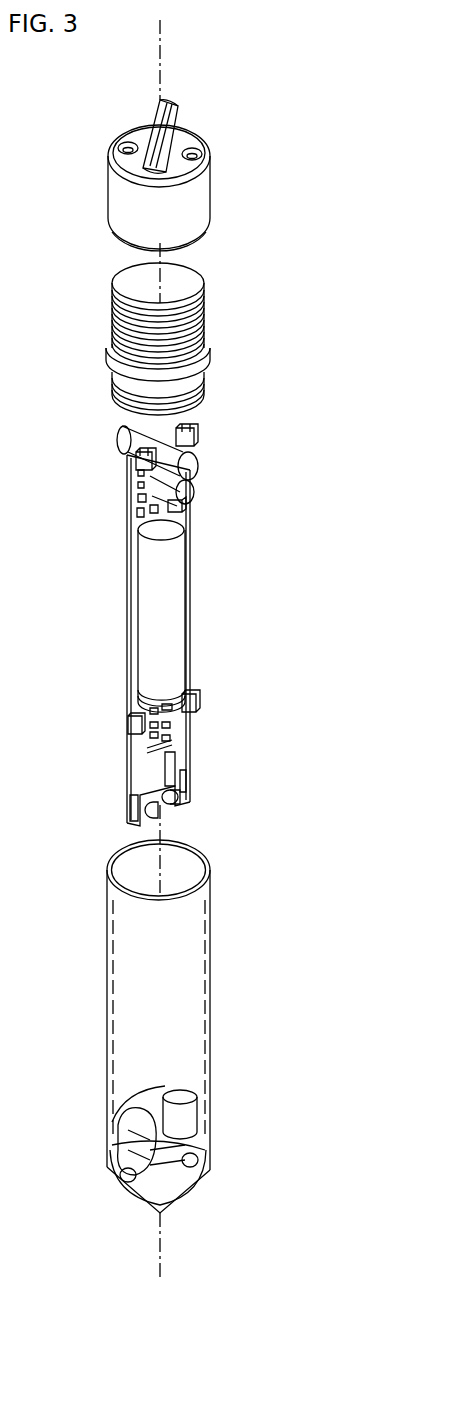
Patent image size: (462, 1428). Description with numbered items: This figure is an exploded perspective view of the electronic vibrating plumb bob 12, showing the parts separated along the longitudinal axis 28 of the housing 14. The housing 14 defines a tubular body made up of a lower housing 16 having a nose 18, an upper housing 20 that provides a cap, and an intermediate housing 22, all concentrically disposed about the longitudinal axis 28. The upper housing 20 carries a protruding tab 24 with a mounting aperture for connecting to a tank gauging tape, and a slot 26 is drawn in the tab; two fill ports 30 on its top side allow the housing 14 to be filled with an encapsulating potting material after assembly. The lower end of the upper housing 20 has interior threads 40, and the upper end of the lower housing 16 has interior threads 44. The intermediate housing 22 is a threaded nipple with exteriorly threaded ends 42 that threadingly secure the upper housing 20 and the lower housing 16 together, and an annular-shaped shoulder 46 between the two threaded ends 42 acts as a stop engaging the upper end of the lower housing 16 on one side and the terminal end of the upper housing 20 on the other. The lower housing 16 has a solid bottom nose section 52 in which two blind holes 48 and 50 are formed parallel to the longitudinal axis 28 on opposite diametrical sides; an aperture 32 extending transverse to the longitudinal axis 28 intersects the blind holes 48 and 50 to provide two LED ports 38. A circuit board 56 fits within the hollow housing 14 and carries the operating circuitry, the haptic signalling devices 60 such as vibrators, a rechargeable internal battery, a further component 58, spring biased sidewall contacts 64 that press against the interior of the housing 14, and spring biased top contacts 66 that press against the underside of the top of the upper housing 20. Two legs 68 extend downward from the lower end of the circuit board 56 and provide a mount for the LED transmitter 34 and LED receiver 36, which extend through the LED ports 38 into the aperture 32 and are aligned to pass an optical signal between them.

The electronic vibrating plumb bob 12 is at (80, 129).
The housing 14 is at (102, 892).
The lower housing 16 is at (125, 1012).
The nose 18 is at (140, 1203).
The upper housing 20 is at (112, 193).
The intermediate housing 22 is at (100, 304).
The tab 24 is at (153, 128).
The slot 26 is at (178, 130).
The longitudinal axis 28 is at (162, 60).
The fill ports 30 is at (122, 142).
The aperture 32 is at (195, 1175).
The LED transmitter 34 is at (152, 806).
The LED receiver 36 is at (180, 803).
The LED ports 38 is at (125, 1175).
The interior threads 40 is at (208, 232).
The exteriorly threaded ends 42 is at (208, 318).
The interior threads 44 is at (192, 872).
The annular-shaped shoulder 46 is at (108, 365).
The blind hole 48 is at (118, 1130).
The blind hole 50 is at (190, 1118).
The solid bottom nose section 52 is at (170, 1085).
The circuit board 56 is at (122, 600).
The component 58 is at (192, 510).
The haptic signalling devices 60 is at (196, 470).
The sidewall contacts 64 is at (196, 700).
The top contacts 66 is at (192, 432).
The legs 68 is at (182, 760).